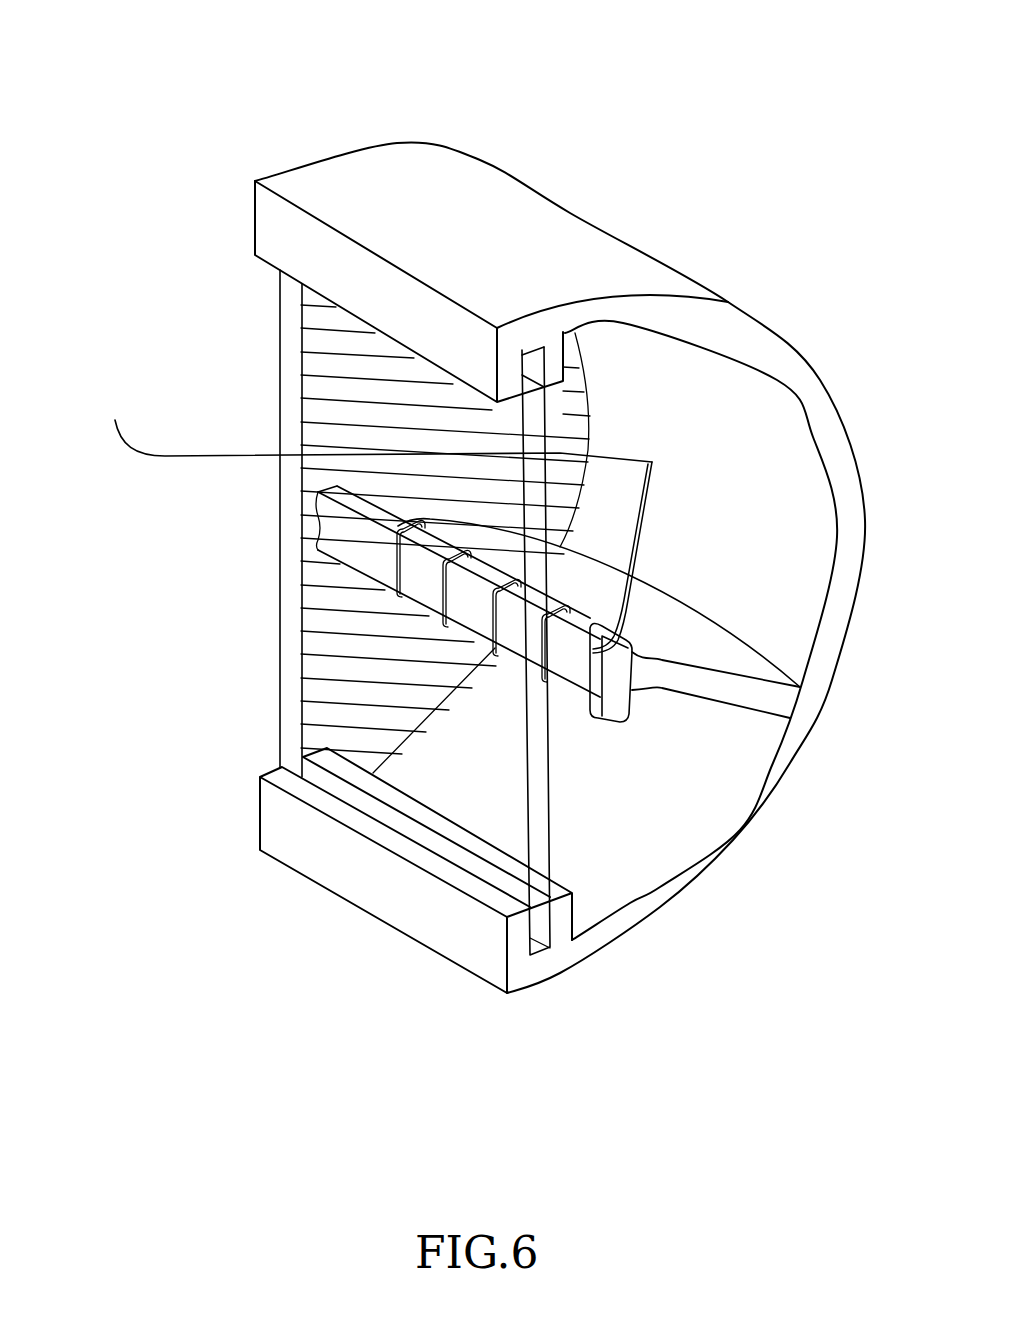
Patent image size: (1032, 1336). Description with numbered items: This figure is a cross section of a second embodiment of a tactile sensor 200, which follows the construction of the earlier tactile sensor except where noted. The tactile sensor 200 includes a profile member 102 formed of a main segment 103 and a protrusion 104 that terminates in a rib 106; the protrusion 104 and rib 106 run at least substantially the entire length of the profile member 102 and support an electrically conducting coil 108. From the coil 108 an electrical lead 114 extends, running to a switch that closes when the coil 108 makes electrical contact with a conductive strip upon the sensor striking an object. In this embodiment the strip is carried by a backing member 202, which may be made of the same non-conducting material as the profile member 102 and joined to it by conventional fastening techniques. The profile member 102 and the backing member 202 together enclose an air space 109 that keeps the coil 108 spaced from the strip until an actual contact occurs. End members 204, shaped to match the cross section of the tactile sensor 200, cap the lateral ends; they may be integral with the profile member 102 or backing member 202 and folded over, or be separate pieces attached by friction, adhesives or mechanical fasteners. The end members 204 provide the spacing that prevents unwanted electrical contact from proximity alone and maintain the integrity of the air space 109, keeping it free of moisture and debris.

The tactile sensor 200 is at (296, 132).
The profile member 102 is at (481, 205).
The main segment 103 is at (865, 518).
The end members 204 is at (405, 417).
The electrical lead 114 is at (150, 462).
The electrically conducting coil 108 is at (318, 542).
The air space 109 is at (630, 807).
The backing member 202 is at (482, 778).
The protrusion 104 is at (735, 695).
The rib 106 is at (622, 692).